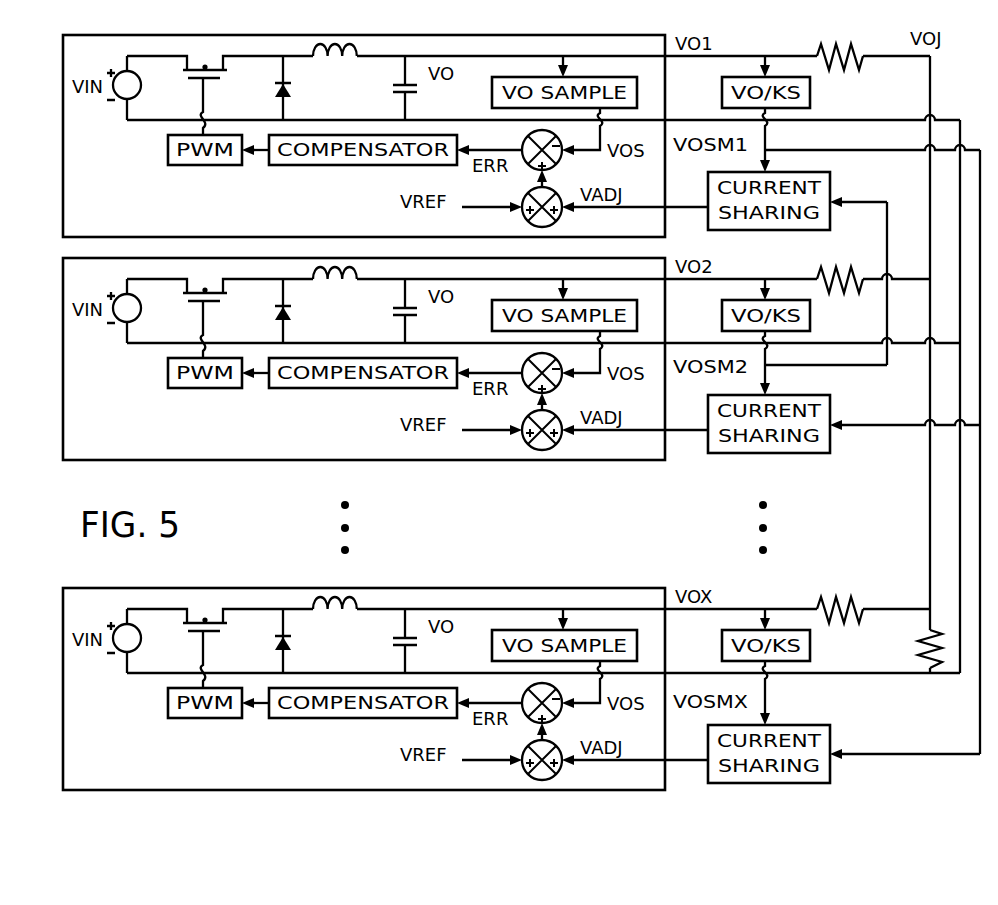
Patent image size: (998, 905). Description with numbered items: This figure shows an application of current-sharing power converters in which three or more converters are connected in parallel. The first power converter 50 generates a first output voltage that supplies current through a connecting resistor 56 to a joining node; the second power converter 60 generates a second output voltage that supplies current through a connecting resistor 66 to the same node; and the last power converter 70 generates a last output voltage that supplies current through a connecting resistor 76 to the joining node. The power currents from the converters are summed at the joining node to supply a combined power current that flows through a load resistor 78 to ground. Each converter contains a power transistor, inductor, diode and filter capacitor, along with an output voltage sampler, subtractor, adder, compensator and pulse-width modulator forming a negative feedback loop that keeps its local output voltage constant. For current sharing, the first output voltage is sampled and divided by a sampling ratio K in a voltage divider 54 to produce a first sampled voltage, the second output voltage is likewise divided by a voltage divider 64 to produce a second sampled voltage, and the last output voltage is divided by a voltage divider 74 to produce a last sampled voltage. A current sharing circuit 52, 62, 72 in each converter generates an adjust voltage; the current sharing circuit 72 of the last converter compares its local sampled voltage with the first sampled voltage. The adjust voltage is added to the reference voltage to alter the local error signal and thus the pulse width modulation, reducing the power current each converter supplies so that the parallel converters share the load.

The first power converter 50 is at (116, 212).
The current sharing circuit 52 is at (830, 183).
The voltage divider 54 is at (722, 97).
The connecting resistor 56 is at (824, 46).
The second power converter 60 is at (116, 435).
The current sharing circuit 62 is at (830, 406).
The voltage divider 64 is at (722, 320).
The connecting resistor 66 is at (824, 269).
The last power converter 70 is at (116, 765).
The current sharing circuit 72 is at (830, 736).
The voltage divider 74 is at (722, 650).
The connecting resistor 76 is at (824, 599).
The load resistor 78 is at (917, 661).